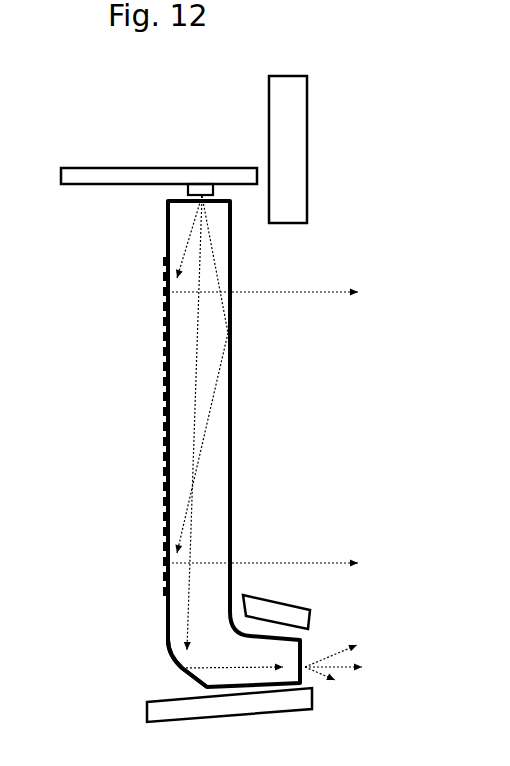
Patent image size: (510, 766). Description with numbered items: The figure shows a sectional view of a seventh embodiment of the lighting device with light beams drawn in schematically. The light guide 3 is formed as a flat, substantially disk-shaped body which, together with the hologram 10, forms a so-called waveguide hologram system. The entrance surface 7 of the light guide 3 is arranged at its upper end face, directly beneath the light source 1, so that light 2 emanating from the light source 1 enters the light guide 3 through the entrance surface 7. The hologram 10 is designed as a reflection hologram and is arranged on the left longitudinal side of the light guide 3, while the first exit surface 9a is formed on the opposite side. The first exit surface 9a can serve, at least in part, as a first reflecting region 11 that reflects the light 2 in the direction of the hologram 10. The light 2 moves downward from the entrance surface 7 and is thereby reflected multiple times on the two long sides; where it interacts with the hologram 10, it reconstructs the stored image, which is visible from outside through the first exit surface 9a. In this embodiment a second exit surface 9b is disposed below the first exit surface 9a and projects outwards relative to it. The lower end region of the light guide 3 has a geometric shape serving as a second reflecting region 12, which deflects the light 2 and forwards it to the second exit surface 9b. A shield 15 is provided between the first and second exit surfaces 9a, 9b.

The light source 1 is at (203, 182).
The light 2 is at (197, 366).
The light guide 3 is at (236, 258).
The entrance surface 7 is at (186, 203).
The first exit surface 9a is at (229, 417).
The second exit surface 9b is at (300, 655).
The hologram 10 is at (165, 435).
The first reflecting region 11 is at (228, 334).
The second reflecting region 12 is at (182, 668).
The shield 15 is at (275, 609).